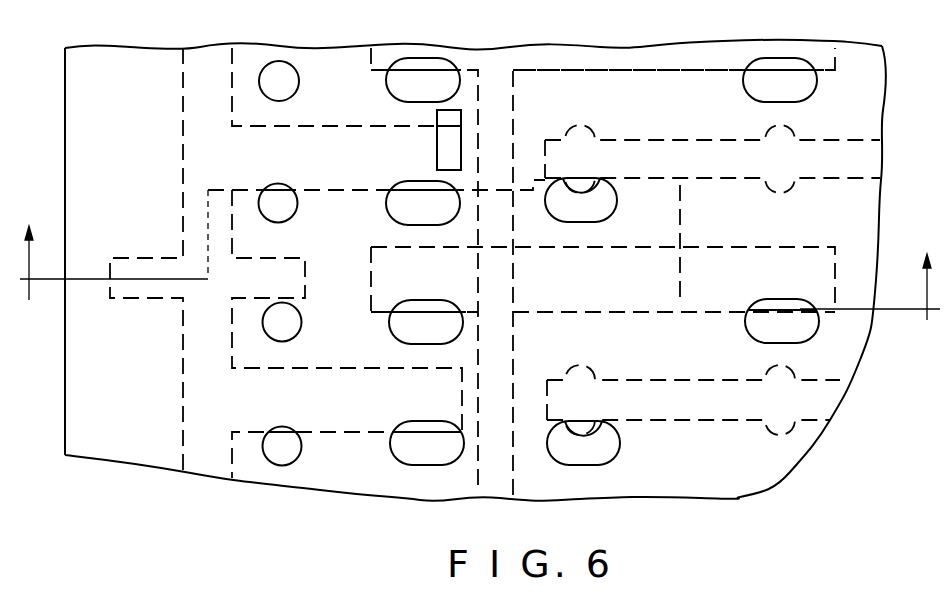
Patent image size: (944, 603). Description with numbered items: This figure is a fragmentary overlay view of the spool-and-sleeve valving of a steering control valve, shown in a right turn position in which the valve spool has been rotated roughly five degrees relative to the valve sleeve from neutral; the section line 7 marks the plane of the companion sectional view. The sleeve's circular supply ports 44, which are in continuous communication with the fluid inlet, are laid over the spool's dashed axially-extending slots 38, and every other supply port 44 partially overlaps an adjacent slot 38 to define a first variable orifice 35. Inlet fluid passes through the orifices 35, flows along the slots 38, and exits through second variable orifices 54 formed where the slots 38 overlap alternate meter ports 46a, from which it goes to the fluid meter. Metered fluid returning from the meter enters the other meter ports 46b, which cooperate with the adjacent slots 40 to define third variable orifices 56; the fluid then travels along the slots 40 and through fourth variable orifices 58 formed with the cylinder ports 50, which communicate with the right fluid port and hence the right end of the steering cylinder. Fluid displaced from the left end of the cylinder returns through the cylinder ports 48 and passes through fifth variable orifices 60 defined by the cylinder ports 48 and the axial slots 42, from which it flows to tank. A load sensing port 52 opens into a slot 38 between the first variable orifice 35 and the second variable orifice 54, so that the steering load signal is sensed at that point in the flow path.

The section line 7- 7 is at (480, 288).
The first variable orifice 35 is at (276, 188).
The axially-extending slot 38 is at (290, 150).
The axially-extending slot 40 is at (547, 50).
The axially-extending slot 42 is at (700, 160).
The supply port 44 is at (282, 86).
The meter port 46a is at (440, 212).
The meter port 46b is at (435, 88).
The cylinder port 48 is at (600, 210).
The cylinder port 50 is at (800, 95).
The load sensing port 52 is at (444, 142).
The second variable orifice 54 is at (420, 186).
The third variable orifice 56 is at (420, 68).
The fourth variable orifice 58 is at (788, 66).
The fifth variable orifice 60 is at (586, 176).